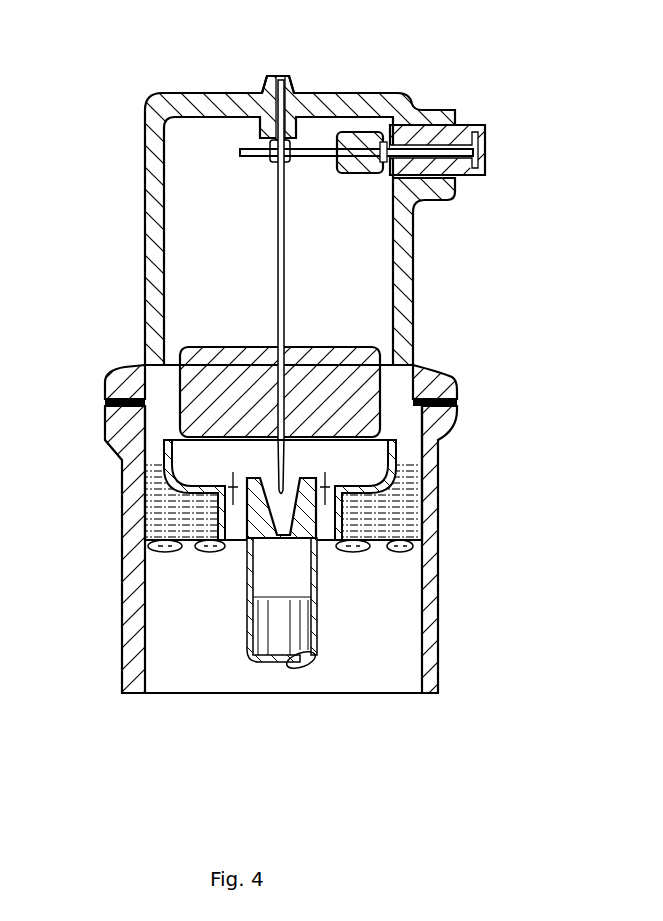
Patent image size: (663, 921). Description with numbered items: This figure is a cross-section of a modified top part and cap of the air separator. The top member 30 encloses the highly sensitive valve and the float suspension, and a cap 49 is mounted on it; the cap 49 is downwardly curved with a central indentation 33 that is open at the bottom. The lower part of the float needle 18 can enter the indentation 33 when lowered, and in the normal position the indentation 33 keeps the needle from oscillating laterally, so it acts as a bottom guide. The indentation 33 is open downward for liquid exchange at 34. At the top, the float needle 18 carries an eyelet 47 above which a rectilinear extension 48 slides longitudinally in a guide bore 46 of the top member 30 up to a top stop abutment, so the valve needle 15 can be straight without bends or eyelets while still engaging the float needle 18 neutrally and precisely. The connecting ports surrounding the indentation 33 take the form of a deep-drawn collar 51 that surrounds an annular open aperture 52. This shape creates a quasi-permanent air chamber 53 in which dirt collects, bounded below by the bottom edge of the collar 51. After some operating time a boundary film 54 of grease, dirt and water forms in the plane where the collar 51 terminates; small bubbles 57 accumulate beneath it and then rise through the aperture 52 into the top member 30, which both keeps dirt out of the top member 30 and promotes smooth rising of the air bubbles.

The valve needle 15 is at (318, 148).
The float needle 18 is at (280, 307).
The top member 30 is at (152, 222).
The central indentation 33 is at (247, 552).
The liquid exchange opening 34 is at (281, 540).
The guide bore 46 is at (267, 93).
The eyelet 47 is at (273, 140).
The rectilinear extension 48 is at (293, 92).
The cap 49 is at (400, 450).
The deep-drawn collar 51 is at (142, 512).
The annular open aperture 52 is at (388, 540).
The air chamber 53 is at (400, 503).
The boundary film 54 is at (378, 548).
The bubbles 57 is at (212, 552).